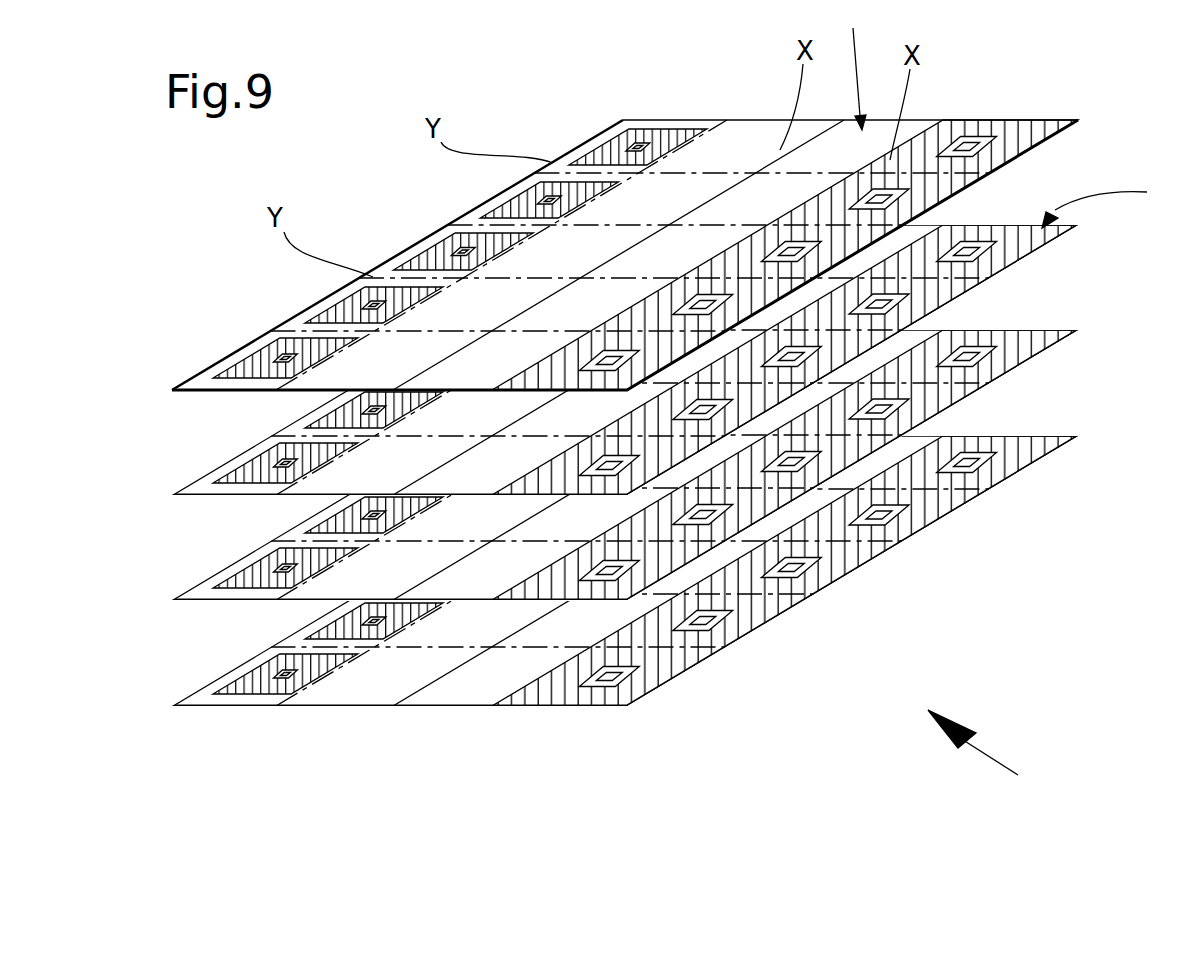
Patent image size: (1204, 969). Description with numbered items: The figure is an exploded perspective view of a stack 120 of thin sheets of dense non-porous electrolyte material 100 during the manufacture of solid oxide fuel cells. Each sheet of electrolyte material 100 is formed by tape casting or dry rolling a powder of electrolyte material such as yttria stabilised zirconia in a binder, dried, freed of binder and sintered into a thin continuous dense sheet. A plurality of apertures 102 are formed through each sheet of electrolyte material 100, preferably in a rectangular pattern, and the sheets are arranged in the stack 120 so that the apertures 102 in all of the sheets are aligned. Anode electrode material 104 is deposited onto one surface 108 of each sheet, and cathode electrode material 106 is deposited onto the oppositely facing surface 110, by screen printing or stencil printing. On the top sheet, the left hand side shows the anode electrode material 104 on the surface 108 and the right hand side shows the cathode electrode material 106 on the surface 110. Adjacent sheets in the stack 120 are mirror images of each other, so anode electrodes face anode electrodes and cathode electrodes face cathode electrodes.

The sheet of electrolyte material 100 is at (1056, 135).
The apertures 102 is at (970, 132).
The anode electrode material 104 is at (697, 130).
The cathode electrode material 106 is at (1012, 125).
The surface 108 is at (1008, 114).
The oppositely facing surface 110 is at (895, 245).
The stack 120 is at (986, 759).